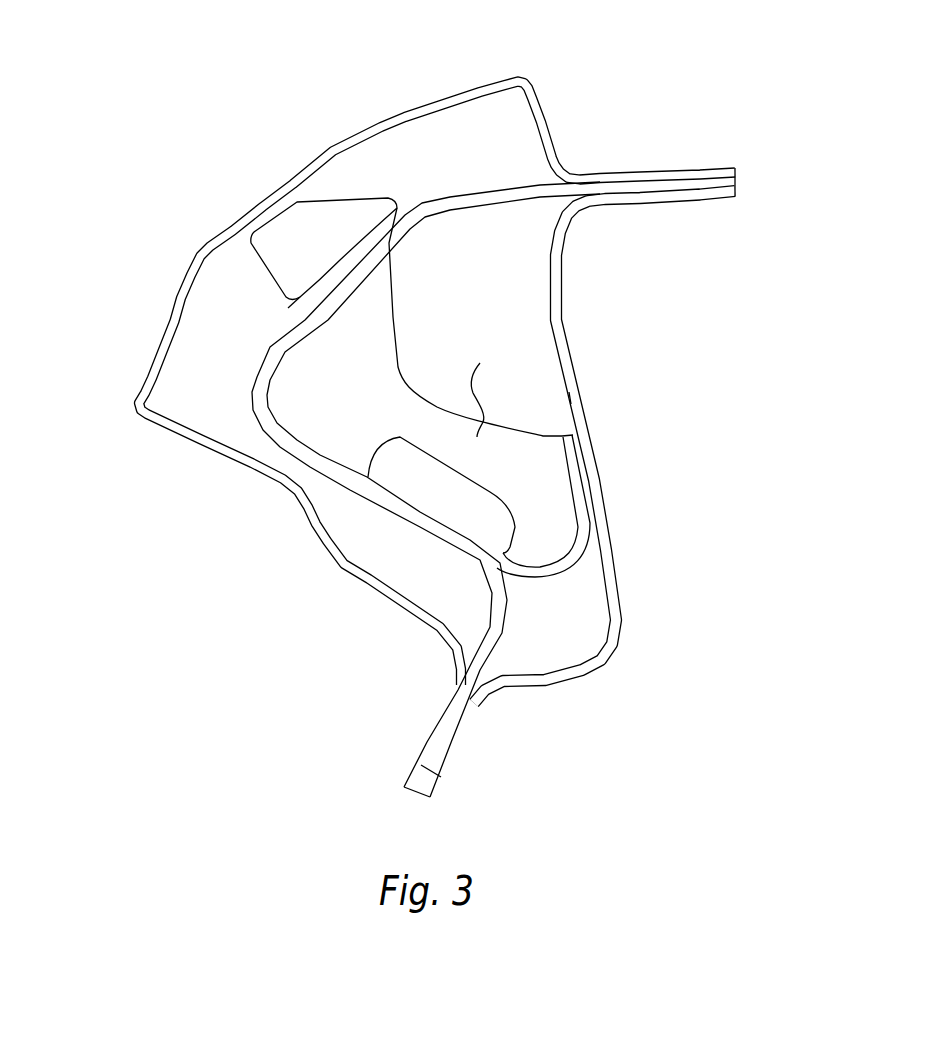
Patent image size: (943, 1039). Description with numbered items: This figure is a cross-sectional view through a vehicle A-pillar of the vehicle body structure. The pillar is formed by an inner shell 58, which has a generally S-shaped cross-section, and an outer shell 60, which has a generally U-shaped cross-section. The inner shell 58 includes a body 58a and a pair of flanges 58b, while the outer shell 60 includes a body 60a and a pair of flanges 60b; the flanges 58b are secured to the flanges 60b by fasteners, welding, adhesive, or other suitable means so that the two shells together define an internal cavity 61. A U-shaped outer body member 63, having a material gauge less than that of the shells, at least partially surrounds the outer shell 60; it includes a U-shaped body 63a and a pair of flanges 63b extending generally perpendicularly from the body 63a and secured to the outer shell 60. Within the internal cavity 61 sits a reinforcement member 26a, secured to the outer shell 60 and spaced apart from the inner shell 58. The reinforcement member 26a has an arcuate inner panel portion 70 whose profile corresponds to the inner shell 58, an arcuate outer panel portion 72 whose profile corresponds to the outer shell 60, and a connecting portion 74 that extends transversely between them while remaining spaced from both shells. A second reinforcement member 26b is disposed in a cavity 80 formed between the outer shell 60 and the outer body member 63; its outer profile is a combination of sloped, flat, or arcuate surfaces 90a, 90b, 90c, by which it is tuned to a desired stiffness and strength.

The reinforcement member 26a is at (433, 353).
The reinforcement member 26b is at (245, 238).
The inner shell 58 is at (622, 543).
The body 58a is at (570, 398).
The flanges 58b is at (715, 202).
The outer shell 60 is at (413, 542).
The body 60a is at (270, 347).
The flanges 60b is at (732, 177).
The internal cavity 61 is at (550, 352).
The outer body member 63 is at (138, 412).
The U-shaped body 63a is at (315, 158).
The flanges 63b is at (692, 170).
The inner panel portion 70 is at (579, 477).
The outer panel portion 72 is at (272, 403).
The connecting portion 74 is at (485, 388).
The cavity 80 is at (209, 372).
The surface 90a is at (347, 197).
The surface 90b is at (274, 222).
The surface 90c is at (400, 203).